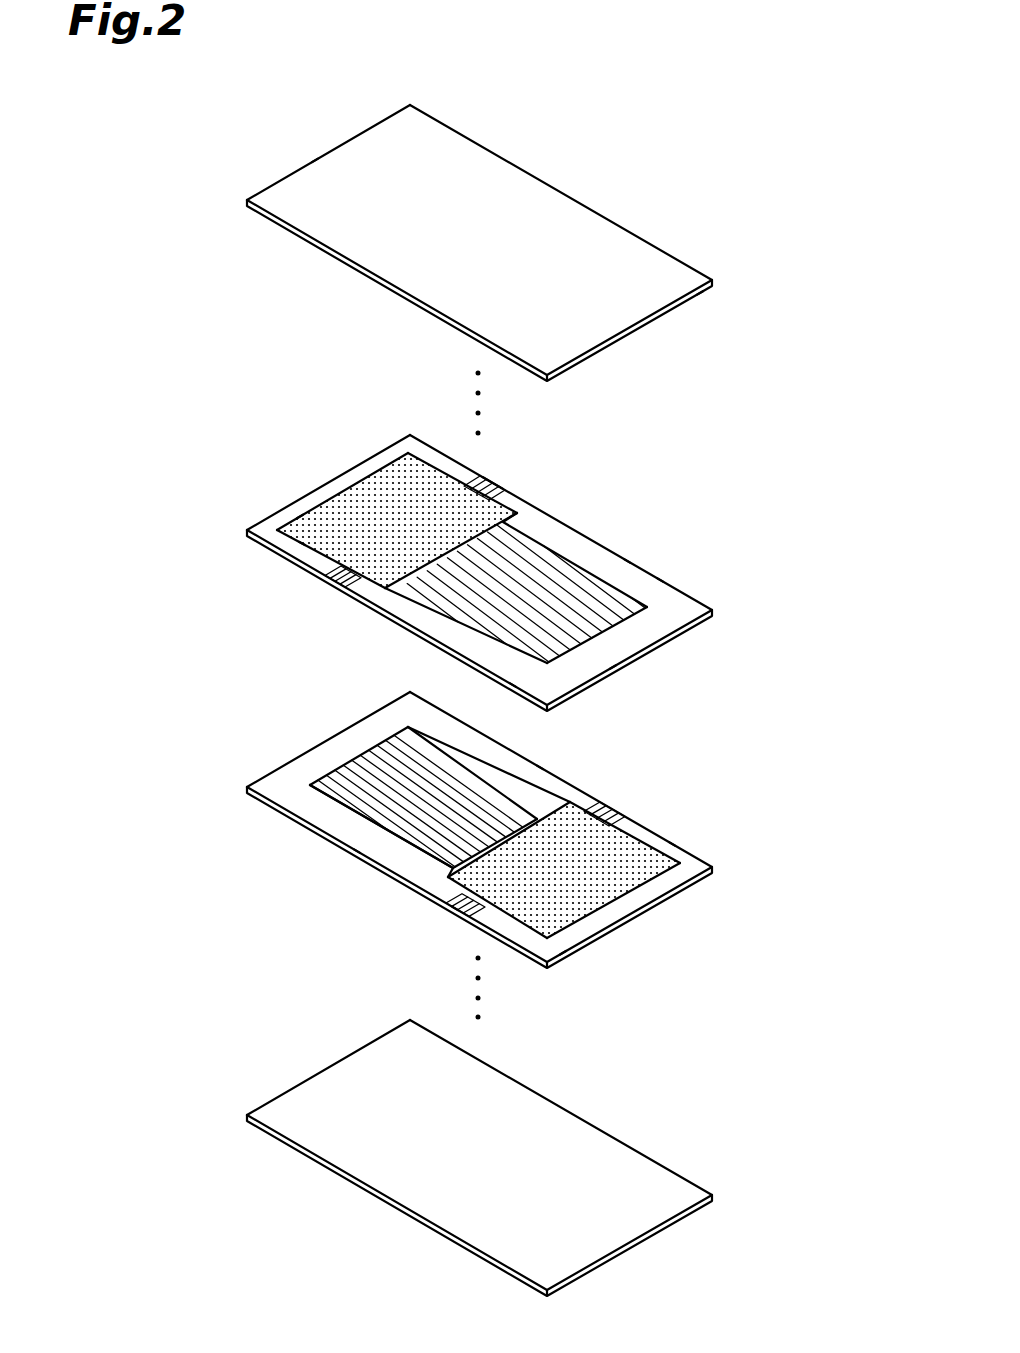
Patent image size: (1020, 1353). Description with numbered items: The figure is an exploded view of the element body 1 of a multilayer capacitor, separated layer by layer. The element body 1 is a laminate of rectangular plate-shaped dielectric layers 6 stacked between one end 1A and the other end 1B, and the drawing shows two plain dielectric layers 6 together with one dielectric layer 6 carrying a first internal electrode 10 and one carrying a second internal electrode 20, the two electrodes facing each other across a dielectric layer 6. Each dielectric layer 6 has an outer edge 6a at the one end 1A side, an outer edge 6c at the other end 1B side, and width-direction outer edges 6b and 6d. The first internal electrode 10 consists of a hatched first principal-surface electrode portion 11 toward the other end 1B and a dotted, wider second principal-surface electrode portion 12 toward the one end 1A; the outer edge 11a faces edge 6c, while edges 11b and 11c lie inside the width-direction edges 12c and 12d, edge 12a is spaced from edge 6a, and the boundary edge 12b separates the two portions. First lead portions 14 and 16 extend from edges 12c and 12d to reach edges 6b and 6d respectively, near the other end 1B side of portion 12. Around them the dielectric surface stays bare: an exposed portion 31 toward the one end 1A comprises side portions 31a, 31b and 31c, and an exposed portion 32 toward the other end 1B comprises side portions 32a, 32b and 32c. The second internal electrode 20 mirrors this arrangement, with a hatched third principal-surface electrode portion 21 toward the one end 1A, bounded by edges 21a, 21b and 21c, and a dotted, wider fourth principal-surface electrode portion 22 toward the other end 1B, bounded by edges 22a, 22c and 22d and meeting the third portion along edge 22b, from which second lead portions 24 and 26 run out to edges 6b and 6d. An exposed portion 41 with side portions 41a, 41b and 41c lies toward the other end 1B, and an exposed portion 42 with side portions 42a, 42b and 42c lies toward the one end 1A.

The element body 1 is at (110, 108).
The one end 1A is at (313, 138).
The other end 1B is at (730, 313).
The dielectric layer 6 is at (347, 185).
The outer edge of dielectric layer 6a is at (383, 115).
The outer edge of dielectric layer 6b is at (348, 267).
The outer edge of dielectric layer 6c is at (635, 330).
The outer edge of dielectric layer 6d is at (517, 162).
The first internal electrode 10 is at (597, 550).
The first principal-surface electrode portion 11 is at (563, 550).
The outer edge of first principal-surface electrode portion 11a is at (630, 617).
The outer edge of first principal-surface electrode portion 11b is at (473, 622).
The outer edge of first principal-surface electrode portion 11c is at (660, 567).
The second principal-surface electrode portion 12 is at (403, 488).
The outer edge of second principal-surface electrode portion 12a is at (300, 513).
The edge of second electrode 12b is at (398, 582).
The outer edge of second principal-surface electrode portion 12c is at (302, 548).
The outer edge of second principal-surface electrode portion 12d is at (430, 462).
The first lead portion 14 is at (327, 577).
The first lead portion 16 is at (493, 480).
The second internal electrode 20 is at (560, 970).
The third principal-surface electrode portion 21 is at (370, 794).
The outer edge of third principal-surface electrode portion 21a is at (393, 740).
The outer edge of third principal-surface electrode portion 21b is at (357, 832).
The outer edge of third principal-surface electrode portion 21c is at (540, 782).
The fourth principal-surface electrode portion 22 is at (593, 862).
The outer edge of fourth principal-surface electrode portion 22a is at (615, 907).
The edge of fourth electrode 22b is at (445, 872).
The outer edge of fourth principal-surface electrode portion 22c is at (478, 918).
The outer edge of fourth principal-surface electrode portion 22d is at (640, 835).
The second lead portion 24 is at (460, 907).
The second lead portion 26 is at (623, 813).
The exposed portion 31 is at (283, 510).
The side portion 31a is at (330, 487).
The side portion 31b is at (282, 535).
The side portion 31c is at (457, 468).
The exposed portion 32 is at (673, 608).
The side portion 32a is at (613, 645).
The side portion 32b is at (513, 662).
The side portion 32c is at (627, 557).
The exposed portion 41 is at (700, 860).
The side portion 41a is at (563, 937).
The side portion 41b is at (455, 927).
The side portion 41c is at (672, 842).
The exposed portion 42 is at (312, 767).
The side portion 42a is at (330, 768).
The side portion 42b is at (303, 798).
The side portion 42c is at (585, 795).